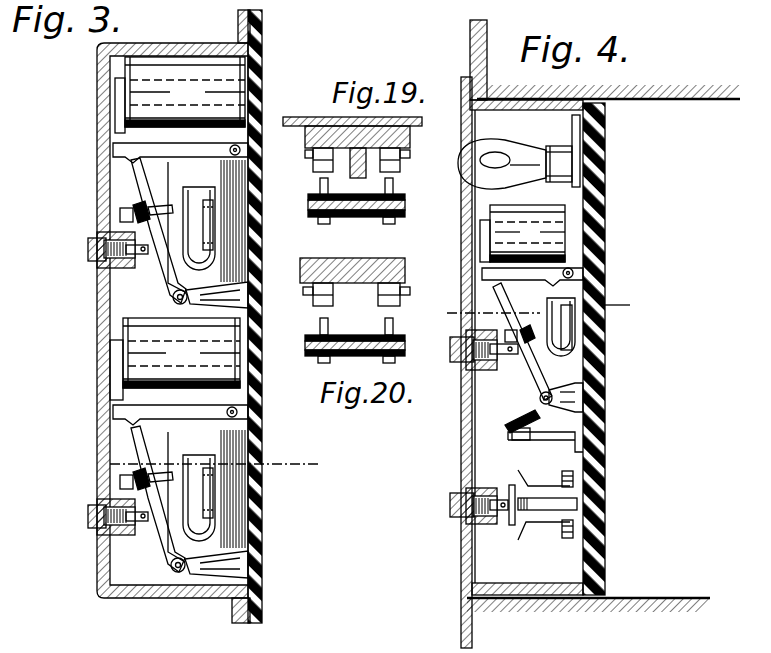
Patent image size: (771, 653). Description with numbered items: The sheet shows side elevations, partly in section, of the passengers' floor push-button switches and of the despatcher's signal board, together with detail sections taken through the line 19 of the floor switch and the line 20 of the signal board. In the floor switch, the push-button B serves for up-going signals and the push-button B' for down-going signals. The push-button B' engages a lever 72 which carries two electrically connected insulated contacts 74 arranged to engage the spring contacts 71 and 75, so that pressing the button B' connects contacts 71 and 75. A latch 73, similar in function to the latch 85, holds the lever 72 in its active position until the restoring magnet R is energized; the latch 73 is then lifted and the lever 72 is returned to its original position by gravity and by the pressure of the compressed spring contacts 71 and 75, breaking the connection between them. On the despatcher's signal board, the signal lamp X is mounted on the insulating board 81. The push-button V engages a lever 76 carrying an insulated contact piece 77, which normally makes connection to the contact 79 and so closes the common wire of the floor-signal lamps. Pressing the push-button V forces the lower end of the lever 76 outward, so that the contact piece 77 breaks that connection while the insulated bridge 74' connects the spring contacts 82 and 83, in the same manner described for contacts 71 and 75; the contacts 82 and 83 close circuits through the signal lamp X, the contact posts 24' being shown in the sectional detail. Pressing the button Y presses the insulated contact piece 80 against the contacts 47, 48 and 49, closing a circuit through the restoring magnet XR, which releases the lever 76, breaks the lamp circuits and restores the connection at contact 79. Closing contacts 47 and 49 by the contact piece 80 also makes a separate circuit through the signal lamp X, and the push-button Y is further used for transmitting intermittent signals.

In FIG. 3, the restoring magnet R is at (233, 98).
In FIG. 3, the push-button switch B is at (96, 257).
In FIG. 3, the push-button switch B' is at (86, 530).
In FIG. 3, the latch 73 is at (115, 413).
In FIG. 3, the lever 72 is at (164, 542).
In FIG. 19, the lever 72 is at (308, 205).
In FIG. 3, the insulated contacts 74 is at (146, 460).
In FIG. 19, the insulated contacts 74 is at (356, 190).
In FIG. 3, the spring contact 75 is at (216, 458).
In FIG. 19, the spring contact 75 is at (398, 170).
In FIG. 3, the section line 19 is at (214, 455).
In FIG. 19, the spring contact 71 is at (313, 172).
In FIG. 20, the insulating board 81 is at (305, 265).
In FIG. 4, the insulating board 81 is at (605, 275).
In FIG. 20, the spring contact 82 is at (312, 300).
In FIG. 20, the spring contact 83 is at (380, 300).
In FIG. 4, the spring contact 83 is at (550, 330).
In FIG. 20, the contact posts 24' is at (356, 325).
In FIG. 20, the lever 76 is at (305, 353).
In FIG. 4, the lever 76 is at (528, 375).
In FIG. 4, the signal lamp X is at (460, 160).
In FIG. 4, the restoring magnet XR is at (553, 236).
In FIG. 4, the latch 85 is at (493, 282).
In FIG. 4, the section line 20 is at (539, 312).
In FIG. 4, the insulated bridge 74' is at (527, 313).
In FIG. 4, the push-button V is at (450, 348).
In FIG. 4, the insulated contact piece 77 is at (518, 426).
In FIG. 4, the contact 79 is at (596, 438).
In FIG. 4, the contact 48 is at (577, 478).
In FIG. 4, the contact 47 is at (577, 503).
In FIG. 4, the push-button Y is at (450, 503).
In FIG. 4, the contact 49 is at (577, 535).
In FIG. 4, the insulated contact piece 80 is at (512, 533).